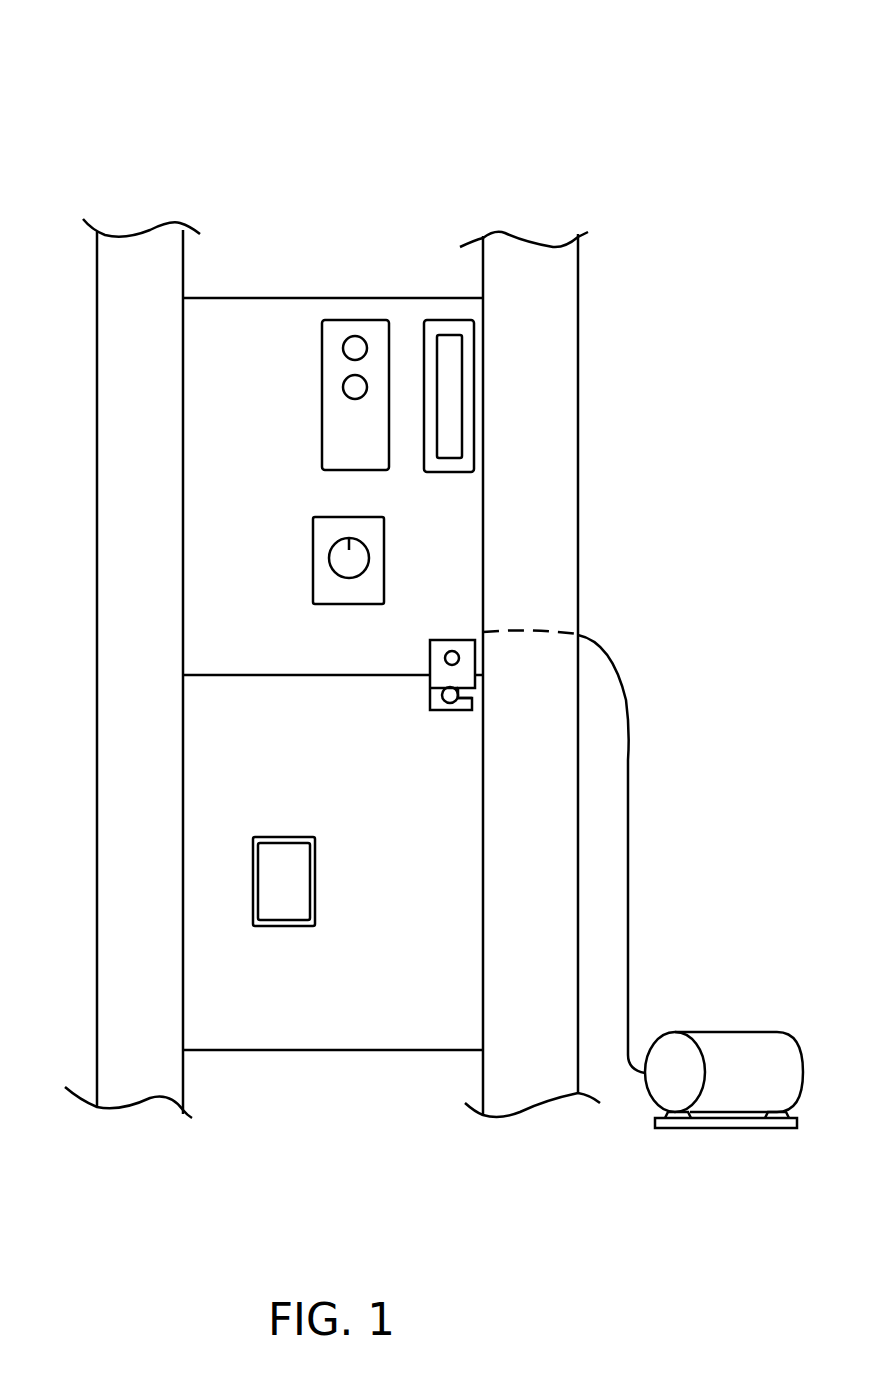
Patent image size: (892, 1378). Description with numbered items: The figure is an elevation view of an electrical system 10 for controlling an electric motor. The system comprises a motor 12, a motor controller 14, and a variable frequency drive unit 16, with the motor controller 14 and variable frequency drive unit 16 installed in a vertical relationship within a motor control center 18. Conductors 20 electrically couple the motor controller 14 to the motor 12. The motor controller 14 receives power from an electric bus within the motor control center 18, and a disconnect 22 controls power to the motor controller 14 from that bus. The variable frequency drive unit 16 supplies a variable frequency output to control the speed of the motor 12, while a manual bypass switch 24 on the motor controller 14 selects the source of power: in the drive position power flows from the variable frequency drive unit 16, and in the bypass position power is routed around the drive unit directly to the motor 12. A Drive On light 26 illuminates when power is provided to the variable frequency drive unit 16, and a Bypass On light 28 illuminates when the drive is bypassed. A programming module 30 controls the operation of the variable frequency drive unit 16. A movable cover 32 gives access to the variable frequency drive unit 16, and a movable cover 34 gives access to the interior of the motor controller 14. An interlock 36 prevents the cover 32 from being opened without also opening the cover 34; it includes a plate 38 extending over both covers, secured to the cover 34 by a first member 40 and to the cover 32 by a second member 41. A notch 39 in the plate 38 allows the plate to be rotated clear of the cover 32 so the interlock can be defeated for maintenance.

The electrical system 10 is at (476, 76).
The motor 12 is at (745, 1040).
The motor controller 14 is at (347, 298).
The variable frequency drive unit 16 is at (305, 1047).
The motor control center 18 is at (333, 616).
The conductors 20 is at (628, 962).
The disconnect 22 is at (450, 390).
The manual bypass switch 24 is at (317, 548).
The Drive On light 26 is at (343, 348).
The Bypass On light 28 is at (343, 387).
The programming module 30 is at (293, 892).
The movable cover 32 is at (420, 1033).
The movable cover 34 is at (460, 510).
The interlock 36 is at (457, 677).
The plate 38 is at (428, 693).
The notch 39 is at (475, 693).
The first member 40 is at (446, 657).
The second member 41 is at (455, 708).